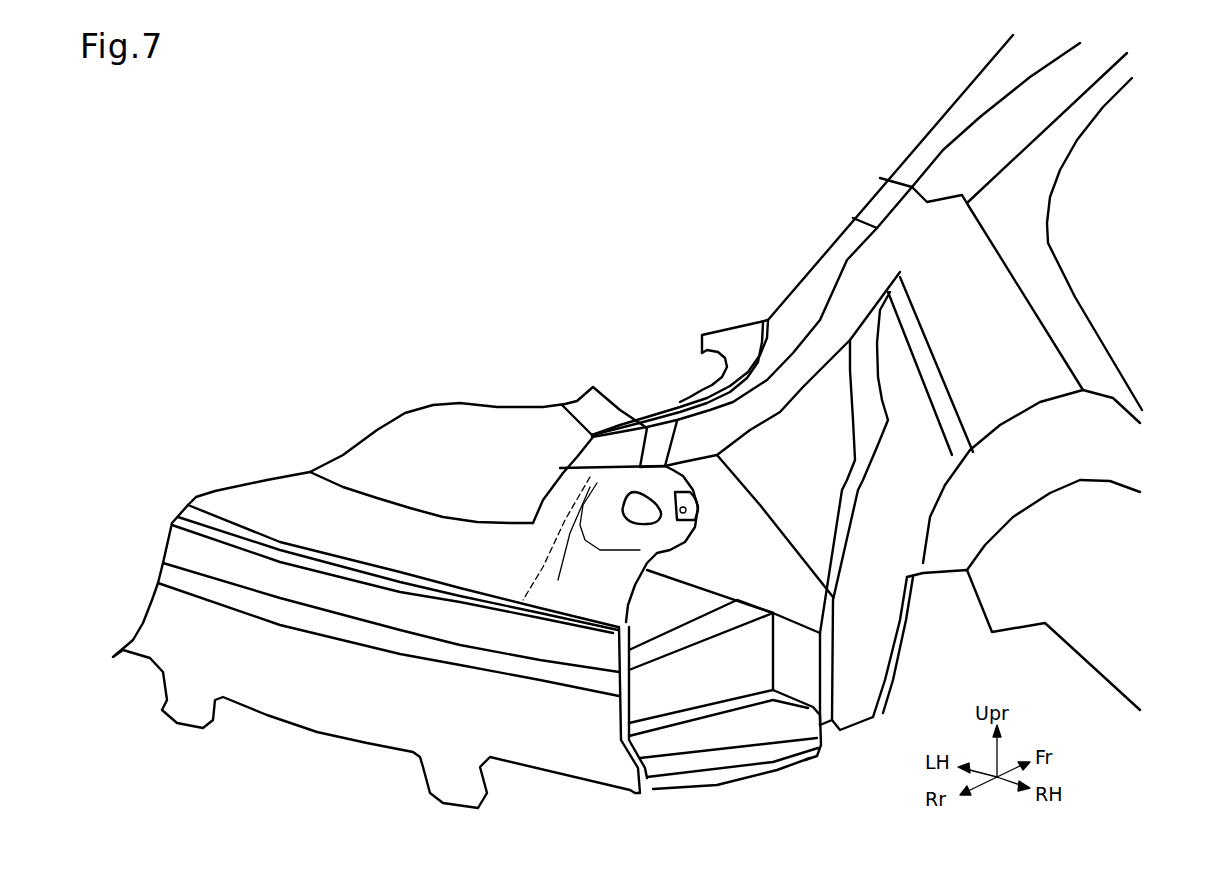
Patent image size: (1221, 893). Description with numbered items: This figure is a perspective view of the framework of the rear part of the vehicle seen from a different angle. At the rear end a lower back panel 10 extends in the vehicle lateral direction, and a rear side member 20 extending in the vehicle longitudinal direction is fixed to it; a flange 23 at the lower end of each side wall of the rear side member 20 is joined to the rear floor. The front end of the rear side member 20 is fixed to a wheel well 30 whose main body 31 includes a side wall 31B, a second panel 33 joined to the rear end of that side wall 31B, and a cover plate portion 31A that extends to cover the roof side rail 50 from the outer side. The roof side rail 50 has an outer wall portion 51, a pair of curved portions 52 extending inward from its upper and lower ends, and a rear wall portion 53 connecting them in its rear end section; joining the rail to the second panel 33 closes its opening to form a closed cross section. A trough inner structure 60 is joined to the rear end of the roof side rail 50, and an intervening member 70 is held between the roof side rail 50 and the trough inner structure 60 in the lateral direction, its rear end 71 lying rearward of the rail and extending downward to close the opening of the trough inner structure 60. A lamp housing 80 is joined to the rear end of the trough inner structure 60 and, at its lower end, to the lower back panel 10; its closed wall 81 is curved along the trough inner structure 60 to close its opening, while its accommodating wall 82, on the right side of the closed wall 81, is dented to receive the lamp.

The lower back panel 10 is at (380, 597).
The rear side member 20 is at (724, 697).
The flange 23 is at (725, 745).
The wheel well 30 is at (1168, 330).
The main body 31 is at (1057, 480).
The cover plate portion 31A is at (1044, 297).
The side wall 31B is at (920, 450).
The second panel 33 is at (976, 511).
The roof side rail 50 is at (867, 236).
The outer wall portion 51 is at (782, 345).
The curved portions 52 is at (864, 210).
The rear wall portion 53 is at (658, 418).
The trough inner structure 60 is at (680, 377).
The intervening member 70 is at (724, 343).
The rear end 71 is at (604, 411).
The lamp housing 80 is at (573, 332).
The closed wall 81 is at (538, 470).
The accommodating wall 82 is at (616, 481).